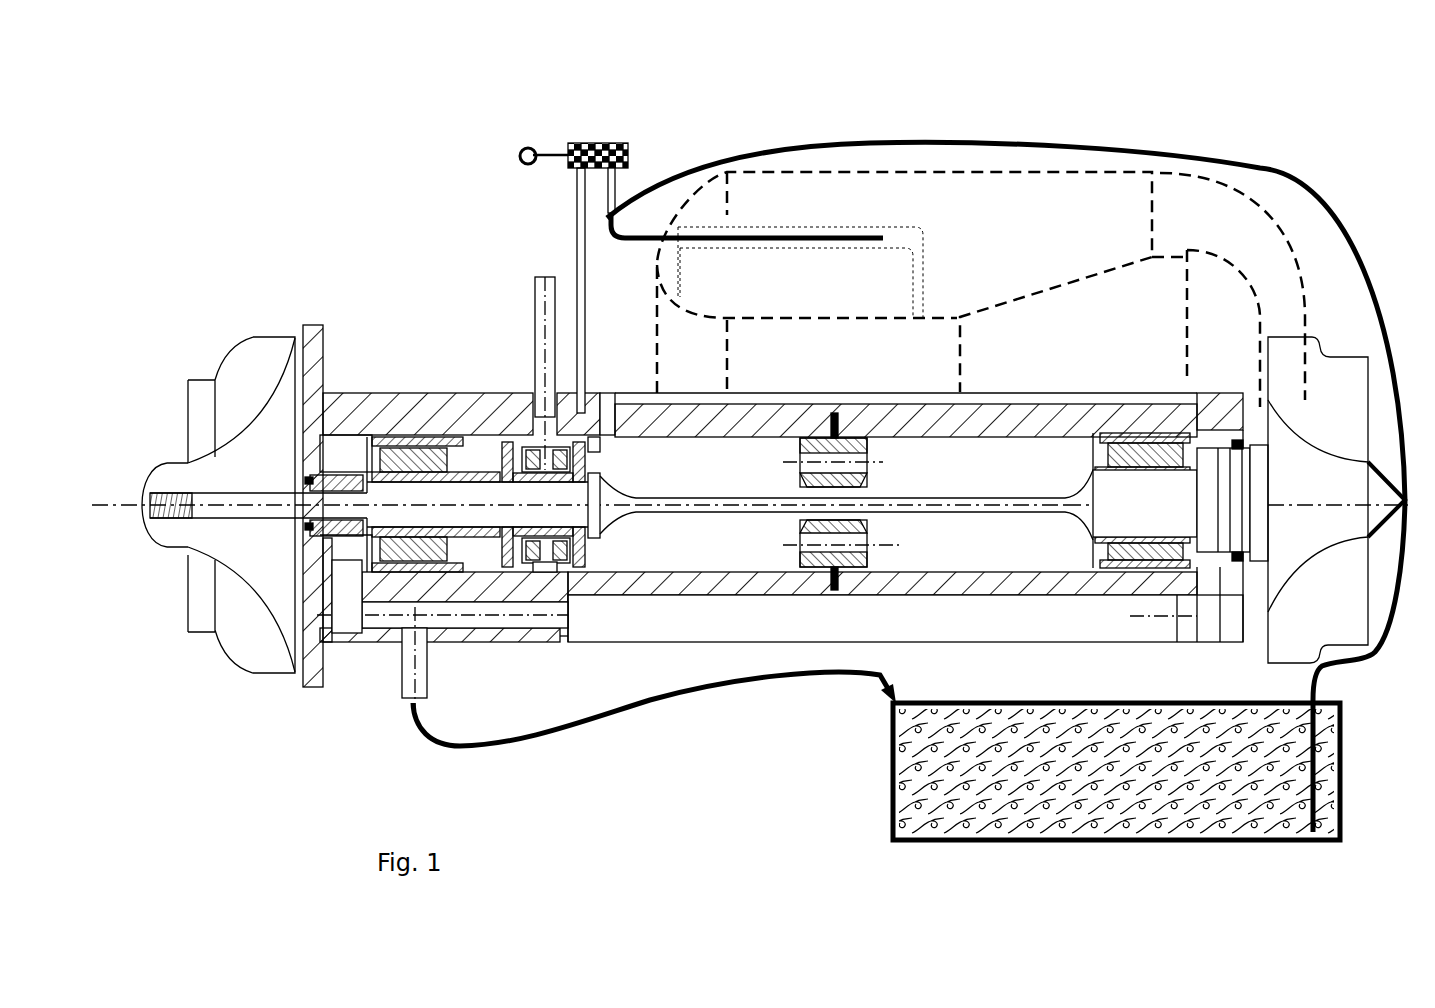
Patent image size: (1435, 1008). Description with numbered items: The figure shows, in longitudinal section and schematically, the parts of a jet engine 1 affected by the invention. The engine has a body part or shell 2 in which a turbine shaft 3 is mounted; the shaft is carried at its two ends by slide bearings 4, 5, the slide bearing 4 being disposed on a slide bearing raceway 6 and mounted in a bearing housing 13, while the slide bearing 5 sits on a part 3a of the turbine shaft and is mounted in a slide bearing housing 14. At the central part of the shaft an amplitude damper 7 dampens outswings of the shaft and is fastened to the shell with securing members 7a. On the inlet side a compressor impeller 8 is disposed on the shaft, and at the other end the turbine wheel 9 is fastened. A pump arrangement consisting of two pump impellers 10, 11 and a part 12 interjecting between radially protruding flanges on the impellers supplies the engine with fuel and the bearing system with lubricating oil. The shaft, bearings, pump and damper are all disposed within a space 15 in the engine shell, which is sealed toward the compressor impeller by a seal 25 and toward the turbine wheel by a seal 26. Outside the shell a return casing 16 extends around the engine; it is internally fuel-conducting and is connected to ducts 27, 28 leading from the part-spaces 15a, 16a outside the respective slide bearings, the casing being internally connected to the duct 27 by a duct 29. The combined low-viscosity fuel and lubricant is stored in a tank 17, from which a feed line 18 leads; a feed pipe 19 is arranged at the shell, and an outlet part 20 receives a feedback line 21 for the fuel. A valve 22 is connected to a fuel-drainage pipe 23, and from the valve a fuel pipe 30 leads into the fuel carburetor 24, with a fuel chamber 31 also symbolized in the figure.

The jet engine parts 1 is at (350, 678).
The body part 2 is at (405, 385).
The turbine shaft 3 is at (893, 488).
The part of the turbine shaft 3a is at (1115, 488).
The slide bearing 4 is at (393, 446).
The slide bearing 5 is at (1113, 553).
The slide bearing raceway 6 is at (488, 548).
The amplitude damper 7 is at (795, 554).
The securing members 7a is at (838, 586).
The compressor impeller 8 is at (262, 332).
The turbine wheel 9 is at (1300, 353).
The pump impeller 10 is at (505, 431).
The pump impeller 11 is at (600, 450).
The interjecting part 12 is at (541, 574).
The bearing housing 13 is at (440, 432).
The slide bearing housing 14 is at (1135, 433).
The space 15 is at (964, 480).
The part-space 15a is at (337, 445).
The return casing 16 is at (868, 628).
The part-space 16a is at (1200, 433).
The tank 17 is at (1116, 757).
The feed line 18 is at (897, 140).
The feed pipe 19 is at (525, 302).
The outlet part 20 is at (407, 703).
The feedback line 21 is at (480, 733).
The valve 22 is at (598, 134).
The fuel-drainage pipe 23 is at (570, 207).
The fuel carburetor 24 is at (800, 272).
The seal 25 is at (297, 462).
The seal 26 is at (1237, 562).
The duct 27 is at (347, 602).
The duct 28 is at (1213, 593).
The duct 29 is at (570, 617).
The fuel pipe 30 is at (619, 212).
The fuel chamber 31 is at (981, 289).